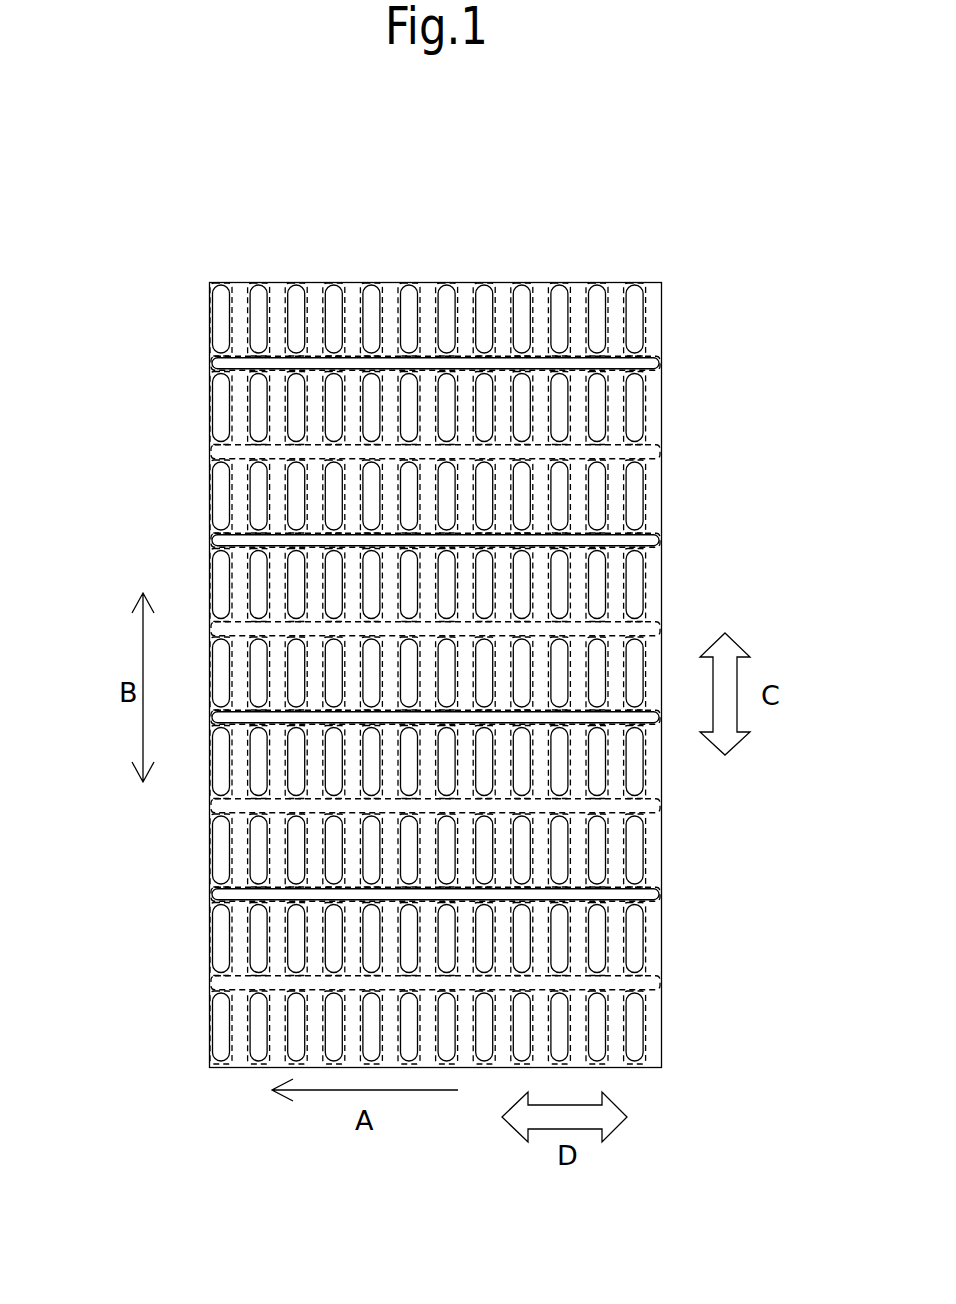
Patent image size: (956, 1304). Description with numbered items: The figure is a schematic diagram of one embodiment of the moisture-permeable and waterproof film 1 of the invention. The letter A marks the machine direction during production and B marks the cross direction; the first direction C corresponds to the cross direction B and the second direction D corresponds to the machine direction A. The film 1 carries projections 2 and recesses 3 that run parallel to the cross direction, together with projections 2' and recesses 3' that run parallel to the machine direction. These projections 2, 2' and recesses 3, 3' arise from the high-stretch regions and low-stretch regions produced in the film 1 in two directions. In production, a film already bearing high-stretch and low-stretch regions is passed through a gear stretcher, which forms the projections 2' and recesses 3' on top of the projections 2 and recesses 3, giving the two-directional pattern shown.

The moisture-permeable and waterproof film 1 is at (205, 235).
The projections 2 is at (428, 618).
The recesses 3 is at (436, 613).
The projections 2' is at (381, 620).
The recesses 3' is at (496, 673).